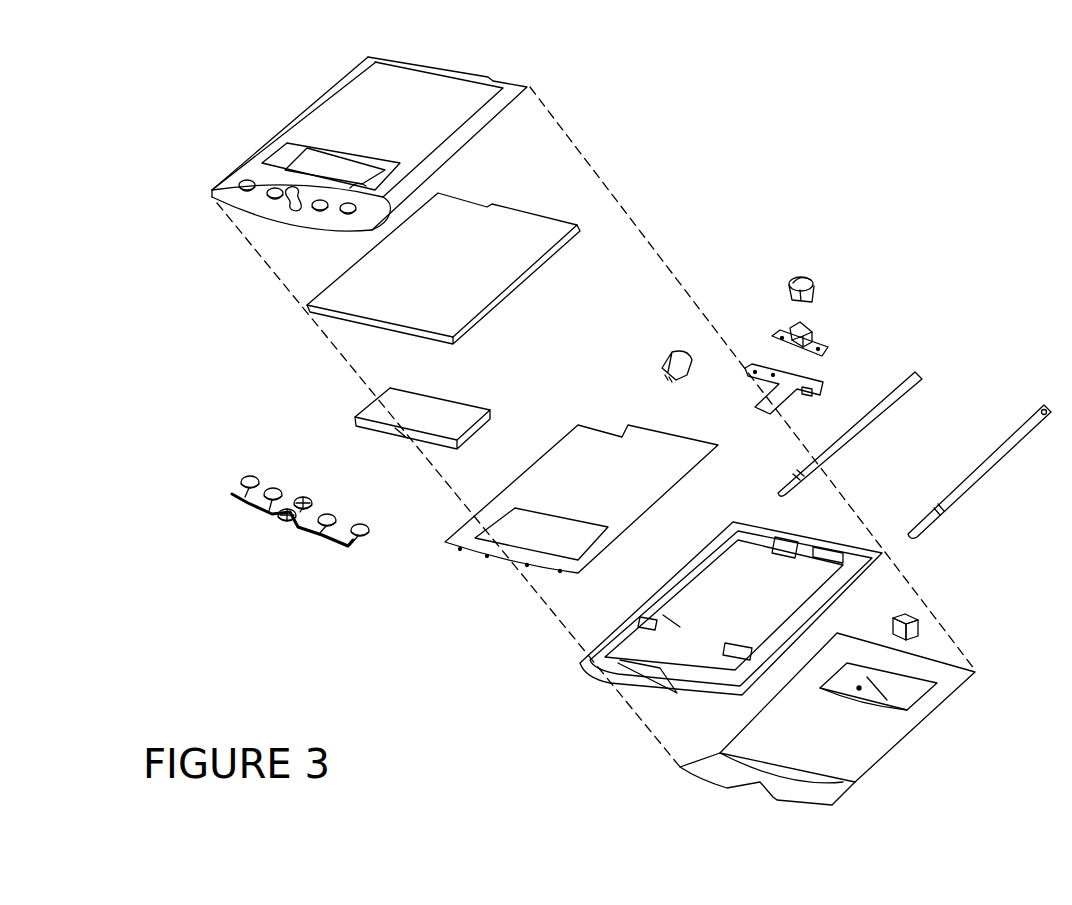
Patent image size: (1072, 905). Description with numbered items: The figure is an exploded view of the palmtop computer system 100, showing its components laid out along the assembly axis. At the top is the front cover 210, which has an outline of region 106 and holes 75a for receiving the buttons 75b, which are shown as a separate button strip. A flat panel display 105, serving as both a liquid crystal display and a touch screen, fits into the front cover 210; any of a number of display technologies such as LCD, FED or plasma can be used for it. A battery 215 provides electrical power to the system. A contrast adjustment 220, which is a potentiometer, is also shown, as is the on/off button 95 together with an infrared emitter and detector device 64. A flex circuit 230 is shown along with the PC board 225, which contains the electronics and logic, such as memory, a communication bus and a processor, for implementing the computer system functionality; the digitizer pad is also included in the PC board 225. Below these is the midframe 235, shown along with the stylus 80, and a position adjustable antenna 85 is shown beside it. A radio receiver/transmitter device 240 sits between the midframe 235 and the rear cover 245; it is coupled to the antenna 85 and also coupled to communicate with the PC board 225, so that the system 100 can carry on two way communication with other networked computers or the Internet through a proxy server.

The palmtop computer system 100 is at (98, 55).
The front cover 210 is at (538, 79).
The region 106 is at (307, 158).
The holes 75a is at (232, 185).
The flat panel display 105 is at (554, 212).
The battery 215 is at (350, 400).
The buttons 75b is at (232, 472).
The PC board 225 is at (451, 517).
The contrast adjustment 220 is at (663, 348).
The on/off button 95 is at (811, 263).
The infrared emitter and detector device 64 is at (833, 334).
The flex circuit 230 is at (830, 374).
The position adjustable antenna 85 is at (927, 365).
The stylus 80 is at (1029, 453).
The midframe 235 is at (881, 587).
The radio receiver/transmitter device 240 is at (937, 627).
The rear cover 245 is at (898, 763).